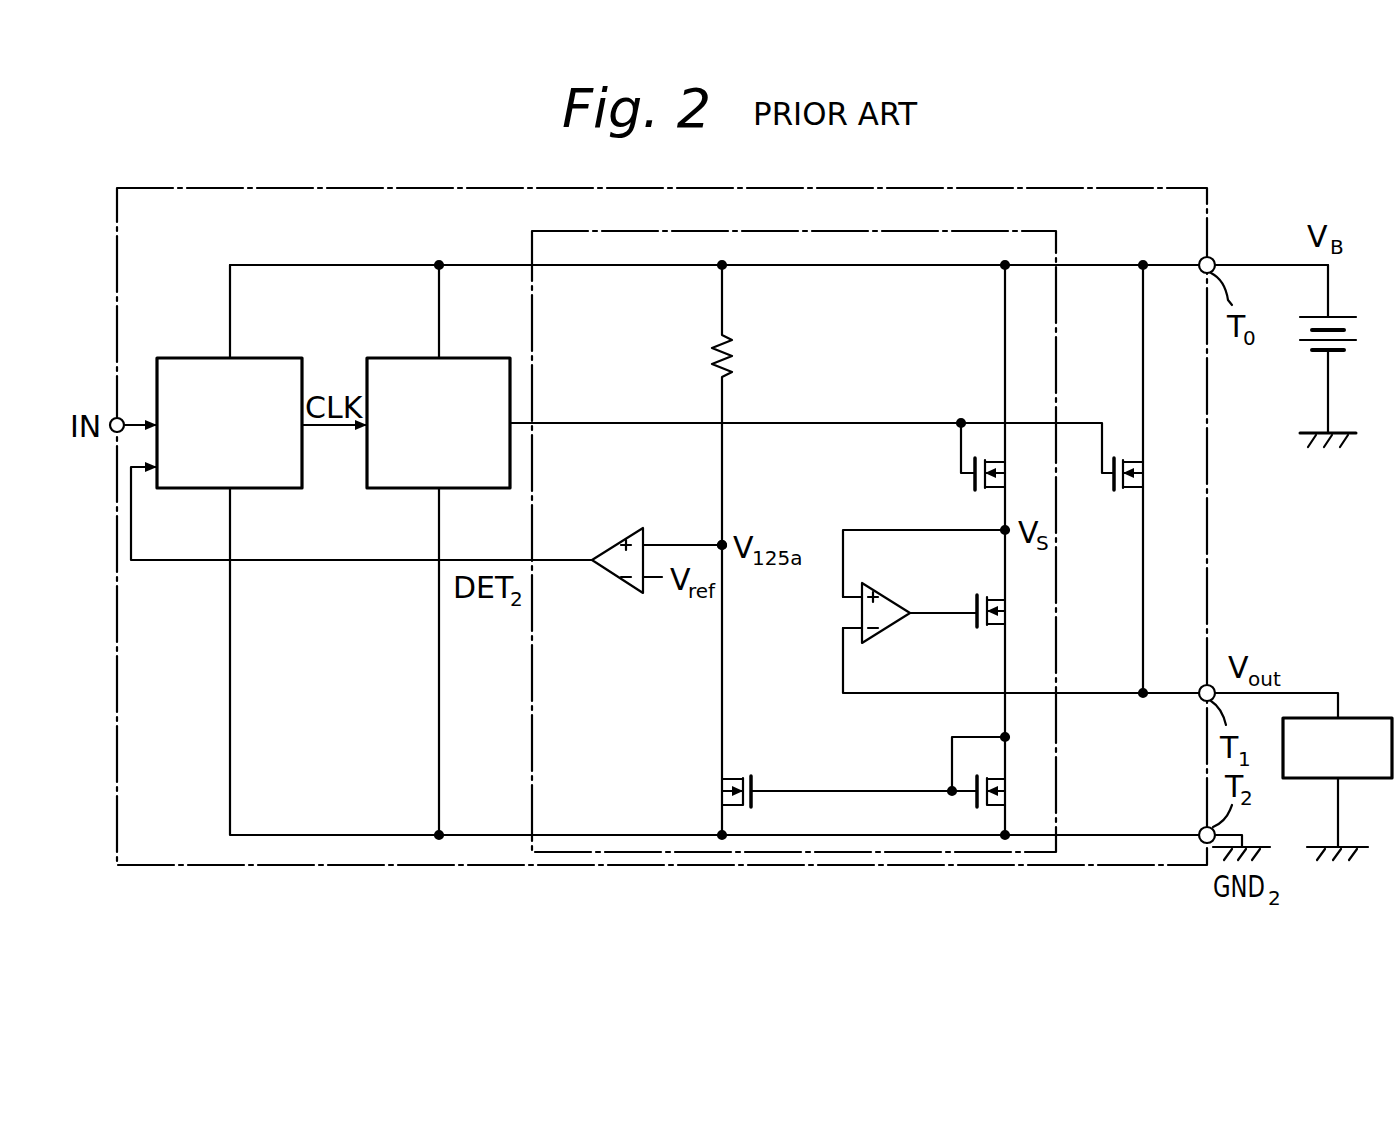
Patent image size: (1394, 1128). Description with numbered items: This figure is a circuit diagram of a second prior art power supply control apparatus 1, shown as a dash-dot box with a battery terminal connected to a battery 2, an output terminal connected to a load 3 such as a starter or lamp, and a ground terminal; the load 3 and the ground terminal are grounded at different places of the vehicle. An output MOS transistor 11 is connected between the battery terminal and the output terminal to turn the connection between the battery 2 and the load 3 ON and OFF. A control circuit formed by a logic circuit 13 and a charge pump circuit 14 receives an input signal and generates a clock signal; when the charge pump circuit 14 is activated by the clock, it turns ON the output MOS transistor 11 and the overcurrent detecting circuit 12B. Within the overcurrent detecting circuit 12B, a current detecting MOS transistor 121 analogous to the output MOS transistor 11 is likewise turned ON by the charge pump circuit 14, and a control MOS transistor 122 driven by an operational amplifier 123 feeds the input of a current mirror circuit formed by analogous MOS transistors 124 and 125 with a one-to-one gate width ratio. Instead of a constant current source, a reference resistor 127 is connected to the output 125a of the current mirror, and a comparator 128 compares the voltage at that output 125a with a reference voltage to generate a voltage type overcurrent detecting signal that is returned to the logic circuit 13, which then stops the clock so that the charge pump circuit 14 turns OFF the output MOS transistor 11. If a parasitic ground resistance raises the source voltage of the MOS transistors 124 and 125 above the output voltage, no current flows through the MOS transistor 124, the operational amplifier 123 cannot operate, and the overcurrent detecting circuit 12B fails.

The power supply control apparatus 1 is at (1035, 188).
The overcurrent detecting circuit 12B is at (990, 231).
The logic circuit 13 is at (257, 358).
The charge pump circuit 14 is at (470, 358).
The reference resistor 127 is at (742, 350).
The comparator 128 is at (632, 533).
The current detecting MOS transistor 121 is at (965, 478).
The control MOS transistor 122 is at (990, 628).
The operational amplifier 123 is at (875, 583).
The MOS transistor 124 is at (990, 807).
The MOS transistor 125 is at (733, 778).
The output of the current mirror circuit 125a is at (726, 552).
The output MOS transistor 11 is at (1133, 470).
The battery 2 is at (1353, 330).
The load 3 is at (1353, 718).